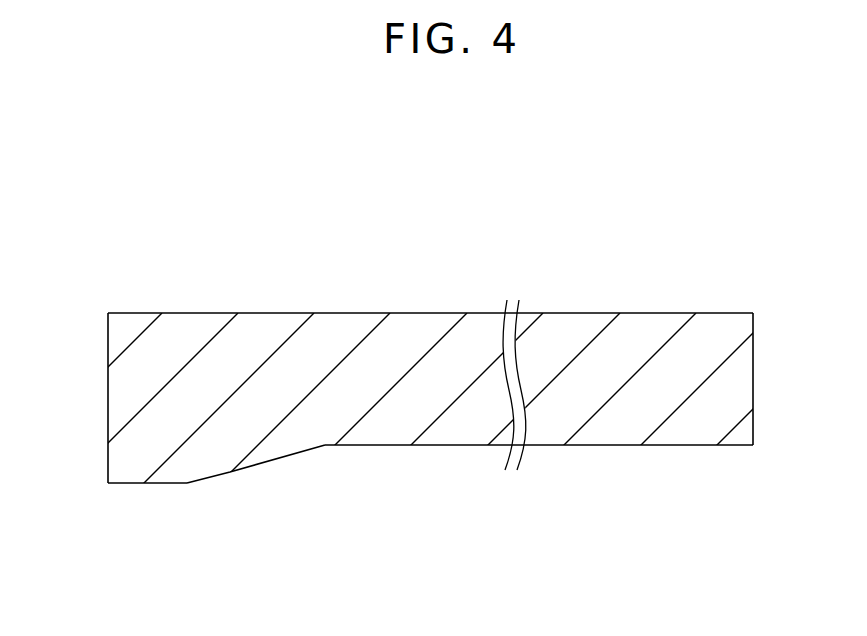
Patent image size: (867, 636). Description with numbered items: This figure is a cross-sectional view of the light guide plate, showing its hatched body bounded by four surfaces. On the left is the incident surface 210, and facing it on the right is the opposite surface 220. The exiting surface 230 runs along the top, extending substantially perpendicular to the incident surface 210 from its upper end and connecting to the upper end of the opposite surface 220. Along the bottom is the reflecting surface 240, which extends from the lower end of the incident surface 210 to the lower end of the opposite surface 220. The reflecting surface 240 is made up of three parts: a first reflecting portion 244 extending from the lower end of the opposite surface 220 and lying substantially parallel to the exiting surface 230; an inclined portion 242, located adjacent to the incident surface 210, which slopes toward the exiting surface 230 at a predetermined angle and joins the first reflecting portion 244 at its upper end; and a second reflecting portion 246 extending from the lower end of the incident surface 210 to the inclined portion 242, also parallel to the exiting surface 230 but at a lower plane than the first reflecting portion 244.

The incident surface 210 is at (108, 397).
The opposite surface 220 is at (753, 378).
The exiting surface 230 is at (358, 313).
The reflecting surface 240 is at (430, 526).
The inclined portion 242 is at (257, 468).
The first reflecting portion 244 is at (539, 506).
The second reflecting portion 246 is at (145, 484).